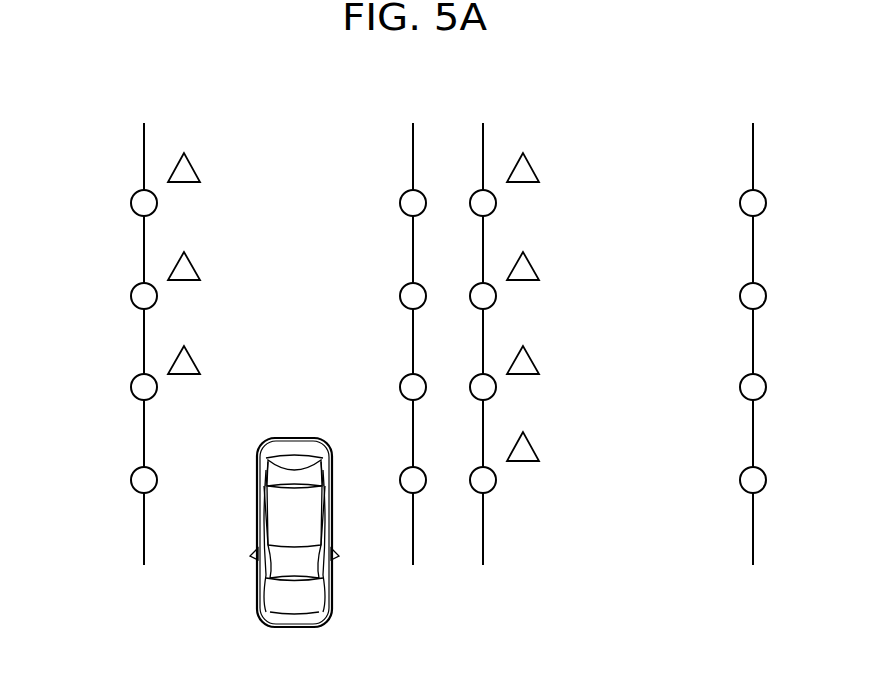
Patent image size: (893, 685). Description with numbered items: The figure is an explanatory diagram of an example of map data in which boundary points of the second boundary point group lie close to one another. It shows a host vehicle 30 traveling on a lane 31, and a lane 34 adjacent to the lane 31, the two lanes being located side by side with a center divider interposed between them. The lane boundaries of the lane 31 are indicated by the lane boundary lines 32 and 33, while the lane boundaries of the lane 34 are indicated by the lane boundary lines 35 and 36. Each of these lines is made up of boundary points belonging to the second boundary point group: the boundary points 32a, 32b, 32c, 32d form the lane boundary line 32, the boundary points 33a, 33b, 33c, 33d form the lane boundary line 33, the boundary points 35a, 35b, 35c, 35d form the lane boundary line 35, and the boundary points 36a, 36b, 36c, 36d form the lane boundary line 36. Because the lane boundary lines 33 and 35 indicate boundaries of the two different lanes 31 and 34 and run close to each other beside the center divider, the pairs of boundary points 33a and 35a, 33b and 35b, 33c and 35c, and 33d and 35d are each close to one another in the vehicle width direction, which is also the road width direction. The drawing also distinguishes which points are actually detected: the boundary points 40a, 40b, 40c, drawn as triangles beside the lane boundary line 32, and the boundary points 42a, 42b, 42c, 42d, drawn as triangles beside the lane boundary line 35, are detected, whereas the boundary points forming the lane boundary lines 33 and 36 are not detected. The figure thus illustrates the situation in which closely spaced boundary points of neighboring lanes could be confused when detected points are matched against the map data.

The host vehicle 30 is at (256, 590).
The lane 31 is at (283, 137).
The lane boundary line 32 is at (144, 131).
The boundary point 32a is at (132, 199).
The boundary point 32b is at (132, 292).
The boundary point 32c is at (132, 383).
The boundary point 32d is at (132, 476).
The lane boundary line 33 is at (413, 135).
The boundary point 33a is at (401, 198).
The boundary point 33b is at (401, 291).
The boundary point 33c is at (401, 383).
The boundary point 33d is at (401, 476).
The lane 34 is at (622, 137).
The lane boundary line 35 is at (483, 140).
The boundary point 35a is at (496, 204).
The boundary point 35b is at (496, 297).
The boundary point 35c is at (496, 388).
The boundary point 35d is at (496, 480).
The lane boundary line 36 is at (753, 136).
The boundary point 36a is at (741, 198).
The boundary point 36b is at (741, 291).
The boundary point 36c is at (741, 383).
The boundary point 36d is at (741, 476).
The boundary point 40a is at (191, 170).
The boundary point 40b is at (191, 268).
The boundary point 40c is at (191, 362).
The boundary point 42a is at (529, 170).
The boundary point 42b is at (531, 268).
The boundary point 42c is at (531, 362).
The boundary point 42d is at (531, 449).